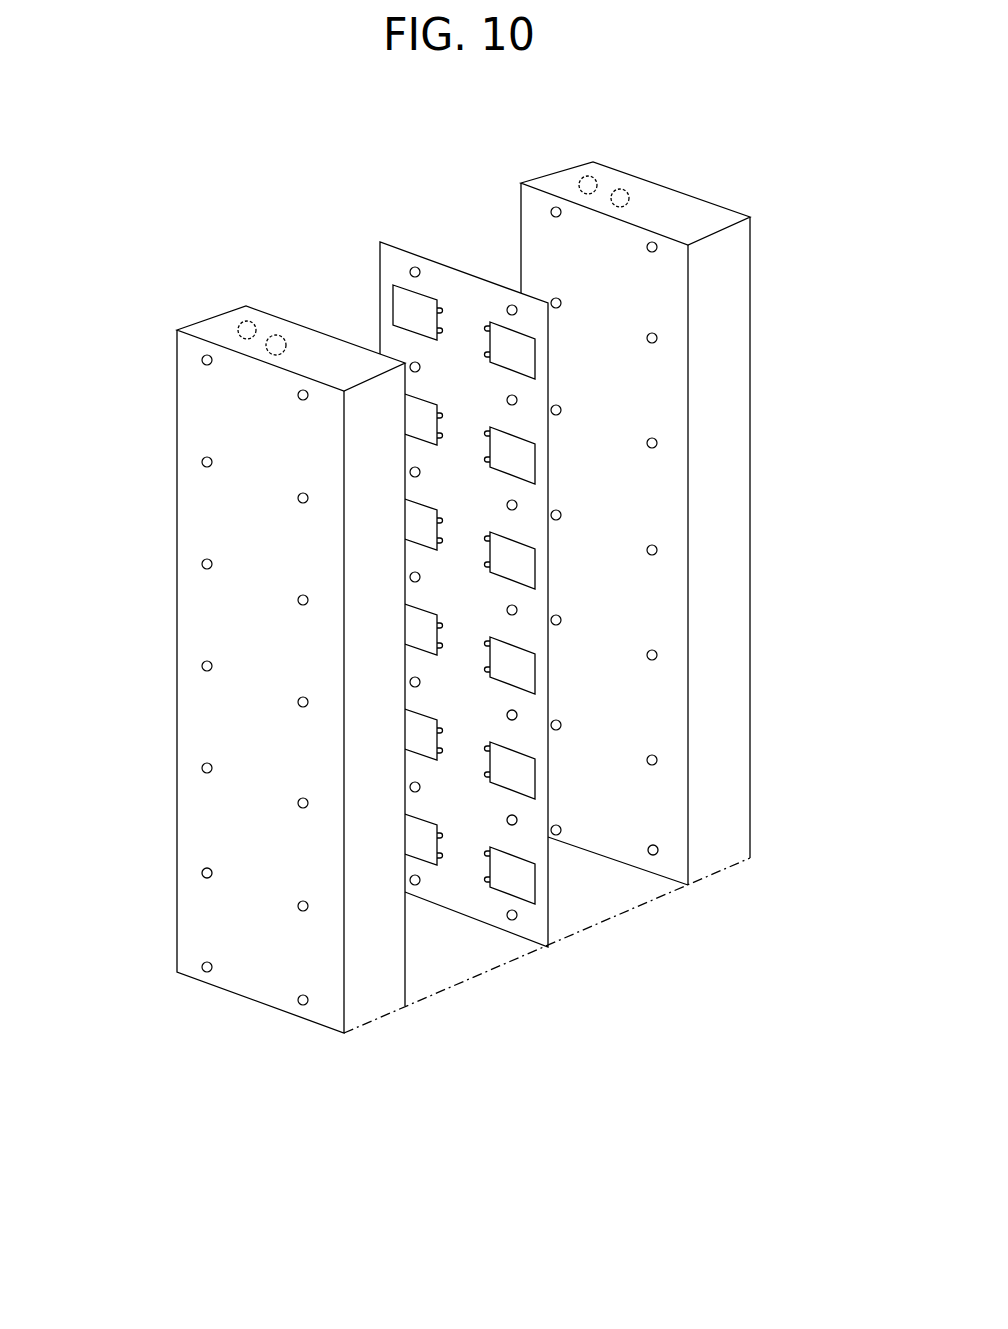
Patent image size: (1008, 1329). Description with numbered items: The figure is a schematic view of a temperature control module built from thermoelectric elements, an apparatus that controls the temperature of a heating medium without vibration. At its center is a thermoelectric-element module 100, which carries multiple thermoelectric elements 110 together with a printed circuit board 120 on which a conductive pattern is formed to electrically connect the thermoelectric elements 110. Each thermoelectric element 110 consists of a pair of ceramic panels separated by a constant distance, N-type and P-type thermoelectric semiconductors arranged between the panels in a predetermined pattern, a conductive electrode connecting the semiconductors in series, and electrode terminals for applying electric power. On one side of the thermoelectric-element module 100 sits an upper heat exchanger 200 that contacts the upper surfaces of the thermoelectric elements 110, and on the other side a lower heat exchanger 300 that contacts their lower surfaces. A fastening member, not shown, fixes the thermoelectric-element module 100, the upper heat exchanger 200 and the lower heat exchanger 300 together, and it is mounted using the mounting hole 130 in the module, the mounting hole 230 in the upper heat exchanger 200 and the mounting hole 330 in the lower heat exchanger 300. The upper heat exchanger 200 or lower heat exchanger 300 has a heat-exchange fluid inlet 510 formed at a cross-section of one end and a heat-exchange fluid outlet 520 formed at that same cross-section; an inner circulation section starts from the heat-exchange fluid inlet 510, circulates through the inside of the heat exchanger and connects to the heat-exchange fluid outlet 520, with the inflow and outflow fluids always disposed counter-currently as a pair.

The thermoelectric-element module 100 is at (555, 913).
The thermoelectric element 110 is at (518, 662).
The printed circuit board 120 is at (520, 733).
The mounting hole 130 is at (518, 822).
The upper heat exchanger 200 is at (218, 400).
The mounting hole 230 is at (202, 865).
The lower heat exchanger 300 is at (722, 420).
The mounting hole 330 is at (657, 847).
The heat-exchange fluid inlet 510 is at (233, 323).
The heat-exchange fluid outlet 520 is at (275, 333).